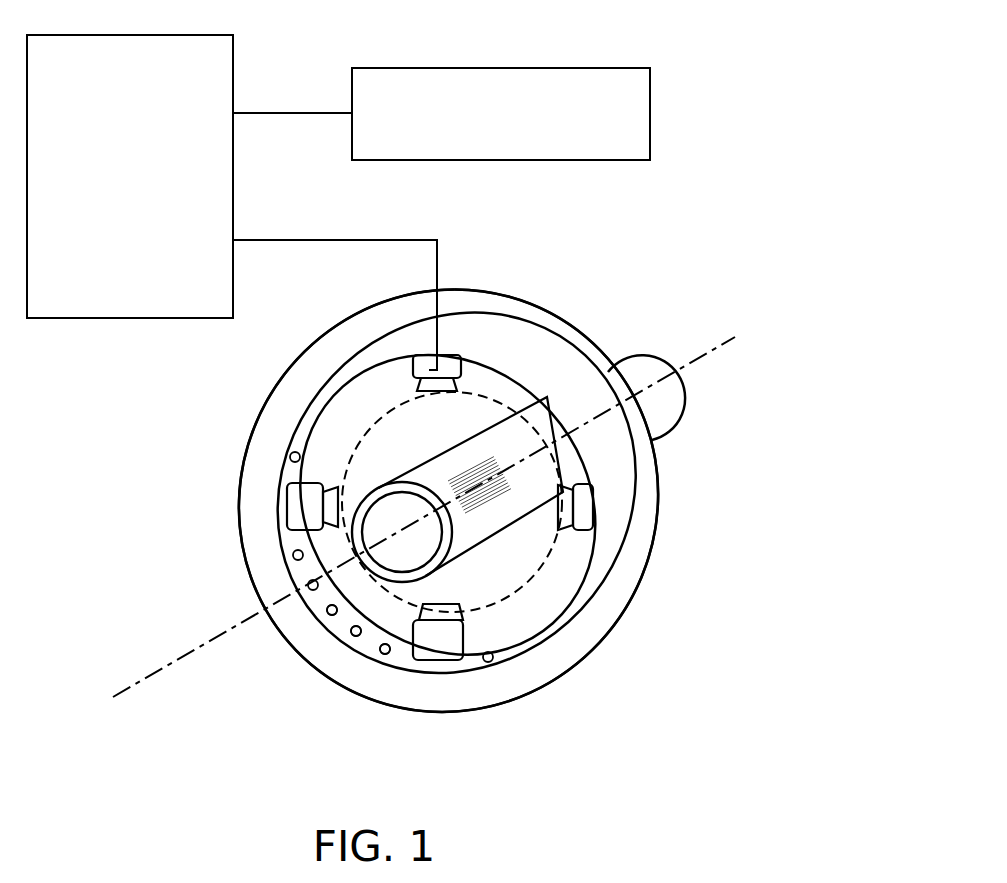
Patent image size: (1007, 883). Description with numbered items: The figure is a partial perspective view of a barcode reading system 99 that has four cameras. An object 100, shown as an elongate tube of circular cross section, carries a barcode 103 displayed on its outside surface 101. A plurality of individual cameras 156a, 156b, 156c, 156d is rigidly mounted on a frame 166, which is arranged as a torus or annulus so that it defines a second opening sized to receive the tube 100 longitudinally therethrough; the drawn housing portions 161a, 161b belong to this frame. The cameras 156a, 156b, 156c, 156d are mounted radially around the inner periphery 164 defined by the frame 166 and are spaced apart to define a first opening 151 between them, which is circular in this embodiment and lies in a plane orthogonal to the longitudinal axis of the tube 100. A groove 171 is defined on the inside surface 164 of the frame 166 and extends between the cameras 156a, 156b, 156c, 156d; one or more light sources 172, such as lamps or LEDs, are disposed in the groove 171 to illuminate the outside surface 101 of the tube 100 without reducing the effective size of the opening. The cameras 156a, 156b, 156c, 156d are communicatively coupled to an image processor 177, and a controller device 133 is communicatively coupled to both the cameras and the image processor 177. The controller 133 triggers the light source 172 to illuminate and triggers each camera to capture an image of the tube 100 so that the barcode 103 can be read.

The system 99 is at (690, 260).
The object 100 is at (700, 410).
The outside surface 101 is at (660, 408).
The barcode 103 is at (487, 503).
The controller device 133 is at (150, 185).
The first opening 151 is at (372, 420).
The camera 156a is at (447, 358).
The camera 156b is at (588, 498).
The camera 156c is at (437, 644).
The camera 156d is at (303, 510).
The first housing portion 161a is at (690, 505).
The second housing portion 161b is at (516, 724).
The inner periphery 164 is at (290, 538).
The frame 166 is at (538, 337).
The groove 171 is at (368, 645).
The light source 172 is at (330, 620).
The image processor 177 is at (522, 123).